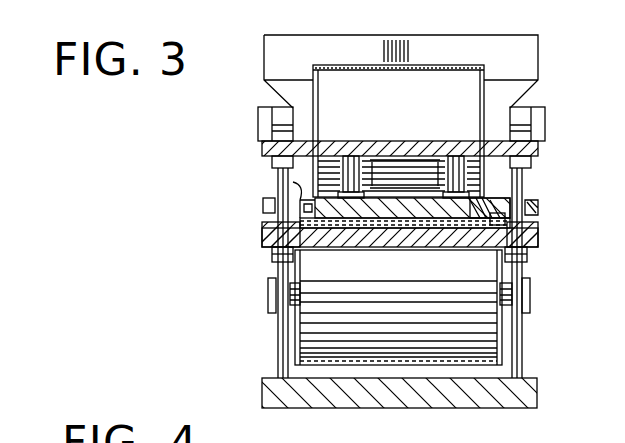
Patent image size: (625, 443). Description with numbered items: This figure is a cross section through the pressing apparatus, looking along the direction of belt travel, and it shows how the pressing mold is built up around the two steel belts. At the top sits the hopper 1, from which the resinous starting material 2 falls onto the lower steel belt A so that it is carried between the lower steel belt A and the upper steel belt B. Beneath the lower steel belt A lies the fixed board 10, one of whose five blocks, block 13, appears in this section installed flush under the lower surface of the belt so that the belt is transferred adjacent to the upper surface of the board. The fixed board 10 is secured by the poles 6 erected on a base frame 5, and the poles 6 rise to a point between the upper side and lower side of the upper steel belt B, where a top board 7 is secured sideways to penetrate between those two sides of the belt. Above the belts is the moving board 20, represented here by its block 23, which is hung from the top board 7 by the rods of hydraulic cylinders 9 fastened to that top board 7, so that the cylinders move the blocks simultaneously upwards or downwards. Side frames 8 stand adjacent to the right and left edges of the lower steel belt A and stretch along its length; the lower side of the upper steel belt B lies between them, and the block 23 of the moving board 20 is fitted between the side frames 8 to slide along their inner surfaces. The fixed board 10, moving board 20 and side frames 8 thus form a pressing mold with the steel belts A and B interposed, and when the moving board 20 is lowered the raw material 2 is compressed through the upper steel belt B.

The hopper 1 is at (511, 42).
The upper steel belt B is at (384, 62).
The top board 7 is at (444, 126).
The hydraulic cylinders 9 is at (364, 126).
The moving board 20 is at (383, 190).
The resinous starting material 2 is at (424, 215).
The block 13 is at (457, 247).
The fixed board 10 is at (356, 248).
The block 23 is at (478, 200).
The side frames 8 is at (295, 185).
The poles 6 is at (278, 331).
The base plate 5 is at (456, 398).
The lower steel belt A is at (384, 236).